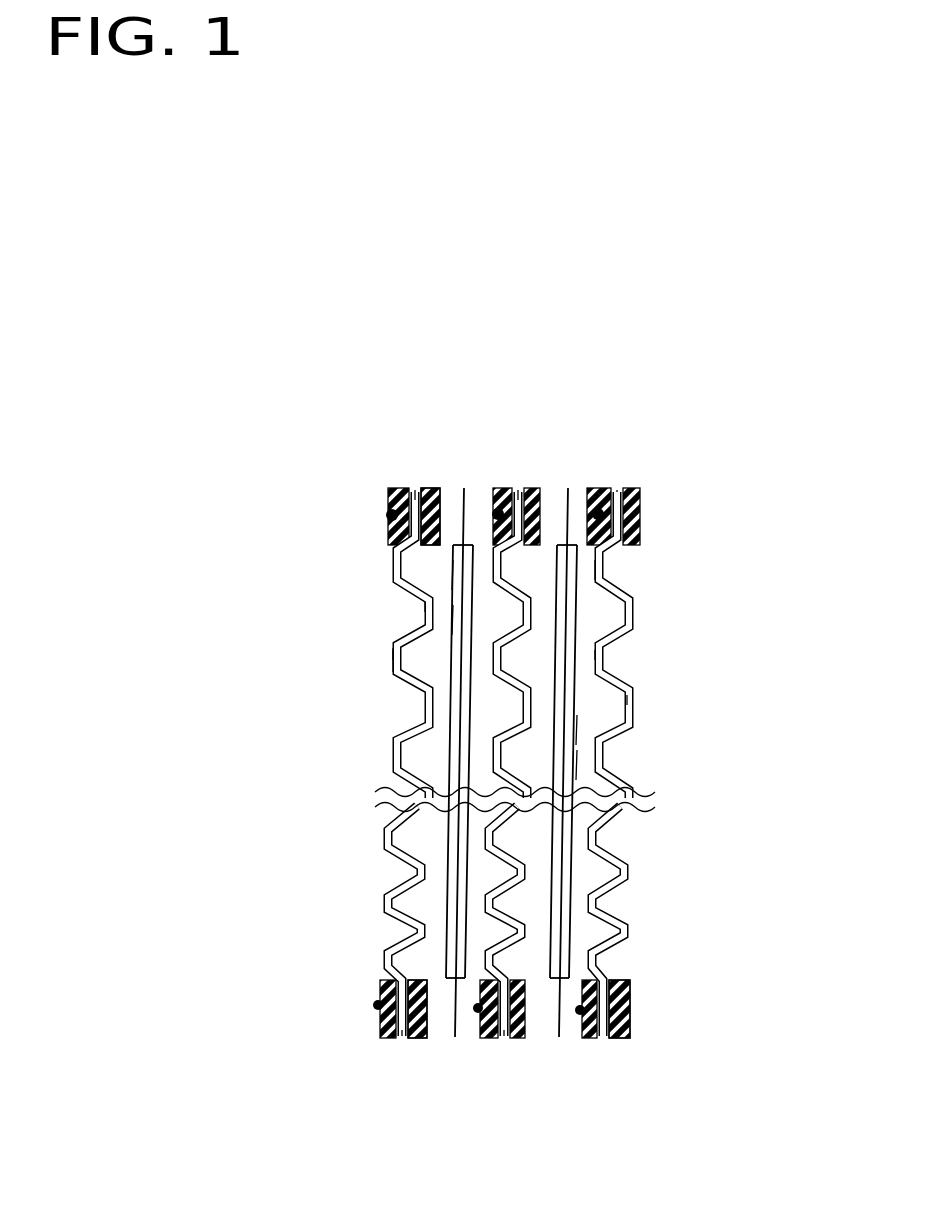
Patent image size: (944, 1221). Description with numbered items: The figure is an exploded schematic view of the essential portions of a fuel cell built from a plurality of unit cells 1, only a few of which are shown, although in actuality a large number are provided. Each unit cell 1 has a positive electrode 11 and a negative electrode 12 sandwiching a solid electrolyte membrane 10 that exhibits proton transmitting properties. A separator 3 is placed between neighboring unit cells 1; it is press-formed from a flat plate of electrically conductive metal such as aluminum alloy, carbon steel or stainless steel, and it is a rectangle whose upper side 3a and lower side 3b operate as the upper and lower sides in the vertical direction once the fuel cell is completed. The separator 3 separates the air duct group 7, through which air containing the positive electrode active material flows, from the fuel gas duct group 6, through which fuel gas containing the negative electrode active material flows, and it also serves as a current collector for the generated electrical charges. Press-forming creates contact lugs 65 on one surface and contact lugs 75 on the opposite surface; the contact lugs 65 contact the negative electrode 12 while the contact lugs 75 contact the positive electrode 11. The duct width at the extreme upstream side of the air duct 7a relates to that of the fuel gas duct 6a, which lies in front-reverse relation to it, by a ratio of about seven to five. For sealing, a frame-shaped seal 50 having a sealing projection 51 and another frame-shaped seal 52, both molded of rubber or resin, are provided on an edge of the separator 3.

The unit cell 1 is at (473, 540).
The separator 3 is at (415, 486).
The upper side 3a is at (413, 487).
The lower side 3b is at (402, 1040).
The fuel gas duct group 6 is at (605, 642).
The fuel gas duct 6a is at (578, 590).
The air duct group 7 is at (425, 688).
The air duct 7a is at (397, 672).
The solid electrolyte membrane 10 is at (453, 540).
The positive electrode 11 is at (451, 619).
The negative electrode 12 is at (452, 575).
The frame-shaped seal 50 is at (395, 487).
The sealing projection 51 is at (390, 516).
The frame-shaped seal 52 is at (428, 486).
The contact lug 65 is at (394, 656).
The contact lug 75 is at (425, 605).